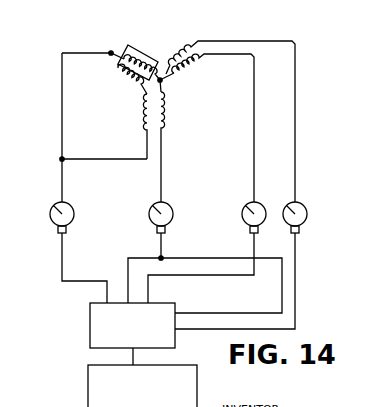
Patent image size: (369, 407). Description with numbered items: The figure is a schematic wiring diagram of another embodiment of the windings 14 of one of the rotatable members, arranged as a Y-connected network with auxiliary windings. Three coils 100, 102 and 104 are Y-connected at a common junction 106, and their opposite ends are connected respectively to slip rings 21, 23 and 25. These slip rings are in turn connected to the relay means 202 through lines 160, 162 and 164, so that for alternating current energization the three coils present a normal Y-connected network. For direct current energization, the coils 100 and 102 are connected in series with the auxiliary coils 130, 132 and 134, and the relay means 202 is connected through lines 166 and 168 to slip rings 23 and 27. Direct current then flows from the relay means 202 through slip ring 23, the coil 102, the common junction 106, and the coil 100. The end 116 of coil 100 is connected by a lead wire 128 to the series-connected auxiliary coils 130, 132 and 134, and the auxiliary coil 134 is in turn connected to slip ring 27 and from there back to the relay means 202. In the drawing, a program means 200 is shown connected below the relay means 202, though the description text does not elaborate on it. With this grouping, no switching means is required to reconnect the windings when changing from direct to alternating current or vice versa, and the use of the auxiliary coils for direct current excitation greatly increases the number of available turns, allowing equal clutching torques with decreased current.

The windings 14 is at (131, 118).
The end of coil 100 116 is at (110, 50).
The coil 100 is at (147, 64).
The common junction 106 is at (164, 82).
The auxiliary coil 132 is at (131, 86).
The auxiliary coil 130 is at (142, 118).
The coil 102 is at (167, 117).
The auxiliary coil 134 is at (182, 43).
The coil 104 is at (200, 65).
The lead wire 128 is at (103, 127).
The slip ring 21 is at (52, 210).
The slip ring 23 is at (154, 201).
The slip ring 25 is at (249, 204).
The slip ring 27 is at (285, 216).
The line 160 is at (60, 242).
The line 162 is at (127, 272).
The line 164 is at (220, 277).
The line 166 is at (281, 285).
The line 168 is at (298, 278).
The relay means 202 is at (90, 333).
The program means 200 is at (88, 380).